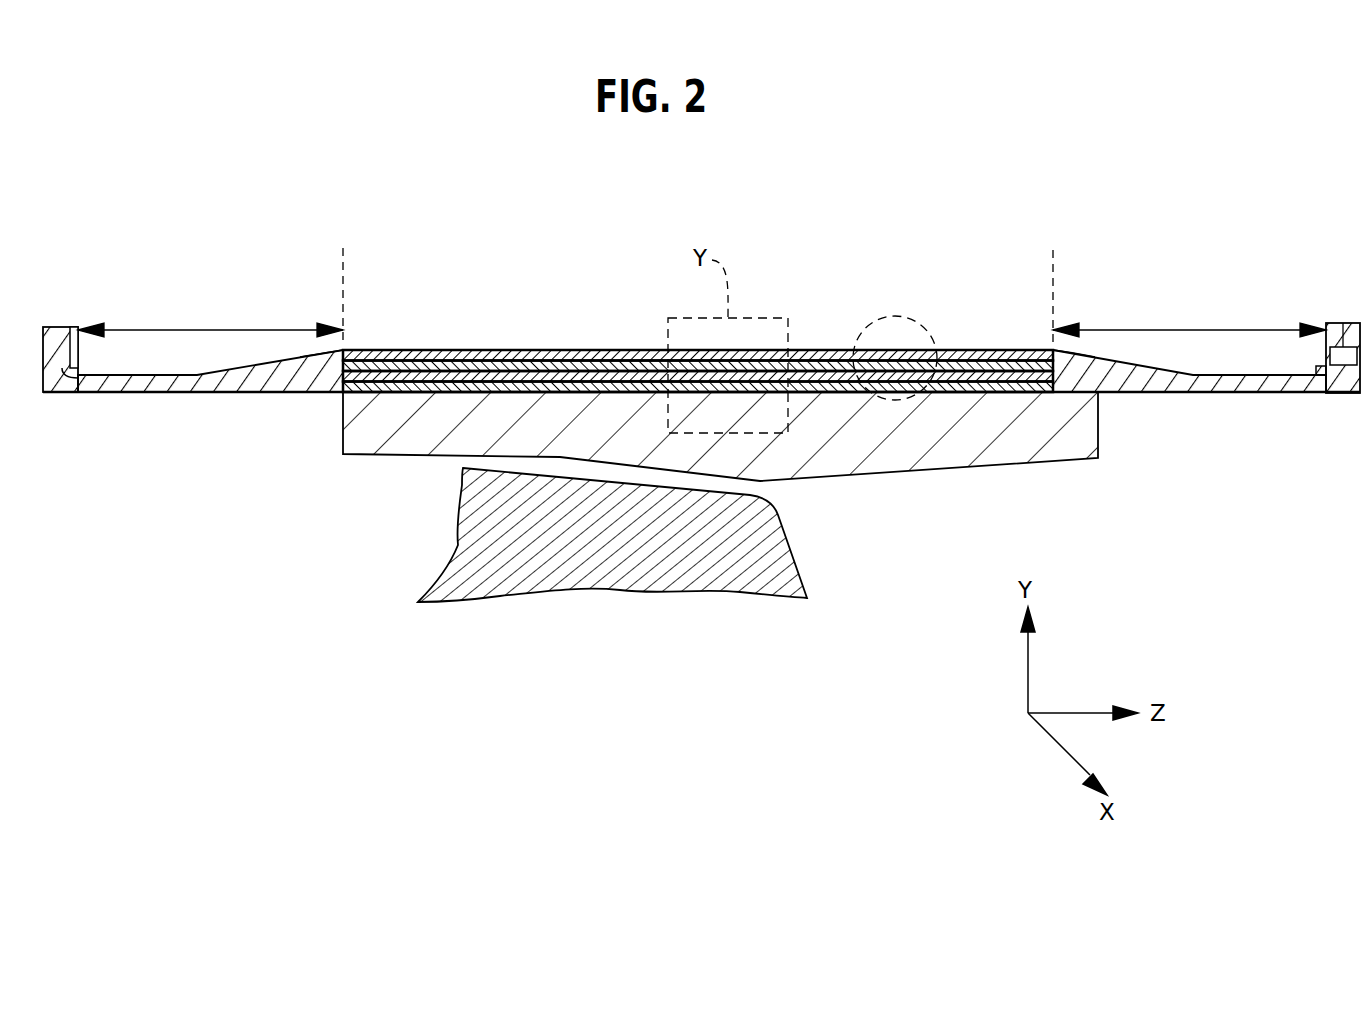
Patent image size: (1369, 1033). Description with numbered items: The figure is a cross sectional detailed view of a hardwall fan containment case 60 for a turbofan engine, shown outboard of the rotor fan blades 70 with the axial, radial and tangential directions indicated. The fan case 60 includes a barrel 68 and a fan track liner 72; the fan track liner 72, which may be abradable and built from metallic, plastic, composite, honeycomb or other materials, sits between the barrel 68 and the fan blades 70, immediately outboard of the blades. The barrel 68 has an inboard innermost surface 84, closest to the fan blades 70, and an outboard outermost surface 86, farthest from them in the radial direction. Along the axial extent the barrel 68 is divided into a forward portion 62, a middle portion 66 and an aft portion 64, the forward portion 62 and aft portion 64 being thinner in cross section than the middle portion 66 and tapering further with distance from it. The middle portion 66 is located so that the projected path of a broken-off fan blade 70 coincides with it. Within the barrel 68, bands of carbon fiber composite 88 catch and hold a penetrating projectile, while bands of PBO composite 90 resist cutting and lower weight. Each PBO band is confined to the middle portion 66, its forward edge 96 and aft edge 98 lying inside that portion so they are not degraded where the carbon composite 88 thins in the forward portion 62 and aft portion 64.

The hardwall fan containment case 60 is at (955, 283).
The forward portion 62 is at (216, 330).
The aft portion 64 is at (1180, 330).
The middle portion 66 is at (711, 348).
The barrel 68 is at (857, 313).
The rotor fan blades 70 is at (793, 540).
The fan track liner 72 is at (425, 445).
The innermost surface 84 is at (1040, 396).
The outermost surface 86 is at (993, 352).
The carbon fiber composite 88 is at (575, 360).
The PBO composite 90 is at (520, 358).
The forward edge 96 is at (338, 368).
The aft edge 98 is at (1055, 370).